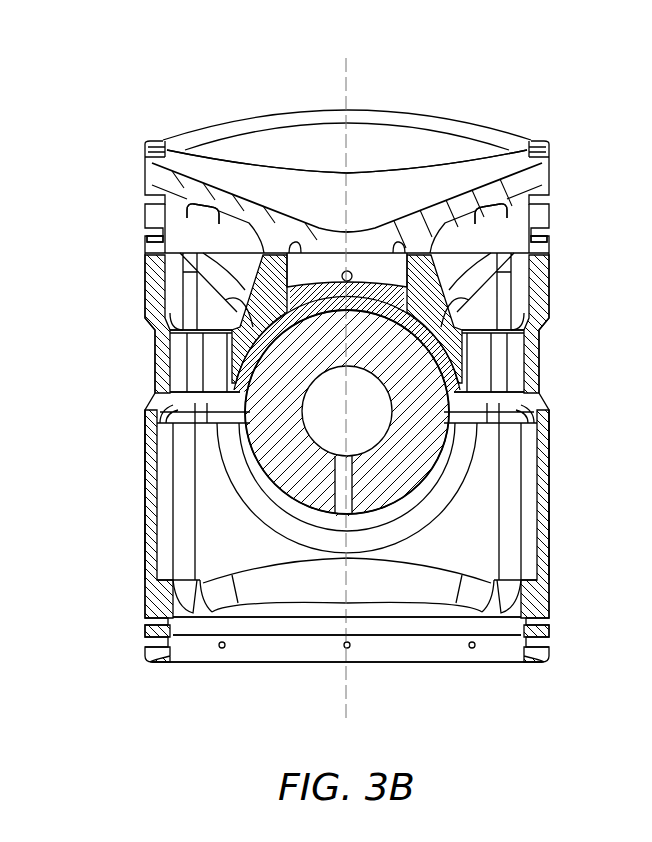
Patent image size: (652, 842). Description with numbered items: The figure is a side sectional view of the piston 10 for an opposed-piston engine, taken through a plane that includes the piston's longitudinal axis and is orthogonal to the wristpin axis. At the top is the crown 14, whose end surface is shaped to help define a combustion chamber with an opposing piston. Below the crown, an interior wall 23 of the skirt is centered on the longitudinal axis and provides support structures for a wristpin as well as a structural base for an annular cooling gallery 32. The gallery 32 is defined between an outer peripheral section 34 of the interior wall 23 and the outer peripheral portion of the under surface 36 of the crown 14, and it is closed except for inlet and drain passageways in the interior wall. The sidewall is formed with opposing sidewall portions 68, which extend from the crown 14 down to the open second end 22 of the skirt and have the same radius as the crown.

The piston 10 is at (470, 88).
The crown 14 is at (232, 143).
The second end 22 is at (408, 672).
The interior wall 23 is at (458, 368).
The annular cooling gallery 32 is at (495, 245).
The outer peripheral section 34 is at (460, 330).
The under surface 36 is at (478, 214).
The sidewall portions 68 is at (549, 485).